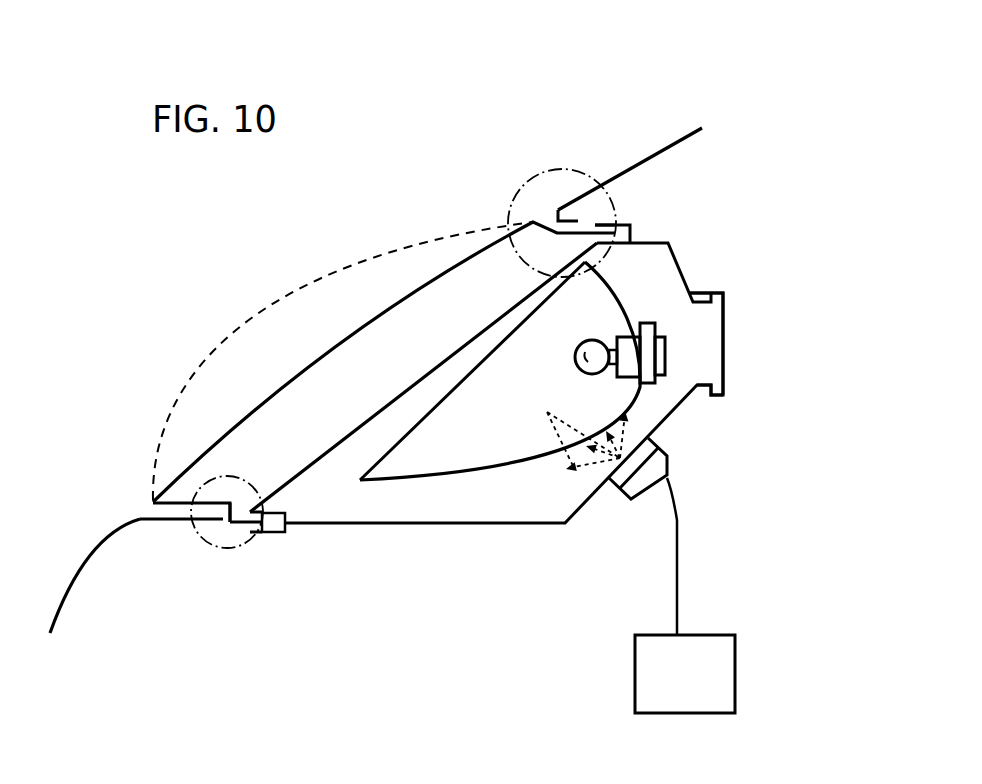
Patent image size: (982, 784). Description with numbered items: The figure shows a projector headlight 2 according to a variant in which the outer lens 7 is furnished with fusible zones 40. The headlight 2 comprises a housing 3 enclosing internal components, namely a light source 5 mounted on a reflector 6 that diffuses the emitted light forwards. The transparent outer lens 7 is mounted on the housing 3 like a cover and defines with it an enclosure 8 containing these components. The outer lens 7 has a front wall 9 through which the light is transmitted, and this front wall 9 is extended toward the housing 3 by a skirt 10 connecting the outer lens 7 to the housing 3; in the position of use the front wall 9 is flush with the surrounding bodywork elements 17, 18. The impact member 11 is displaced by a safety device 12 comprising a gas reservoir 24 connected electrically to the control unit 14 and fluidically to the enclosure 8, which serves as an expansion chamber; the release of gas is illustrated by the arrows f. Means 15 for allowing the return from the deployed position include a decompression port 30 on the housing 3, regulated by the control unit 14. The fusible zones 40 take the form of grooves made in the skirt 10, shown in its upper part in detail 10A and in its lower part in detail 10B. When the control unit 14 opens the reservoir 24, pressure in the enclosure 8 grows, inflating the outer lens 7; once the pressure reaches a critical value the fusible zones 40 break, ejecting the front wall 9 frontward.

The projector headlight 2 is at (380, 604).
The housing 3 is at (690, 278).
The light source 5 is at (568, 343).
The reflector 6 is at (499, 467).
The outer lens 7 is at (384, 352).
The enclosure 8 is at (376, 369).
The front wall 9 is at (177, 416).
The skirt 10 is at (590, 227).
The detail of upper skirt part 10A is at (530, 173).
The detail of lower skirt part 10B is at (222, 550).
The impact member 11 is at (384, 367).
The safety device 12 is at (615, 520).
The control unit 14 is at (672, 689).
The means for allowing displacement 15 is at (693, 292).
The bodywork element 17 is at (78, 574).
The bodywork element 18 is at (650, 157).
The gas reservoir 24 is at (669, 466).
The decompression port 30 is at (698, 395).
The fusible zone 40 is at (554, 210).
The arrows f is at (580, 425).